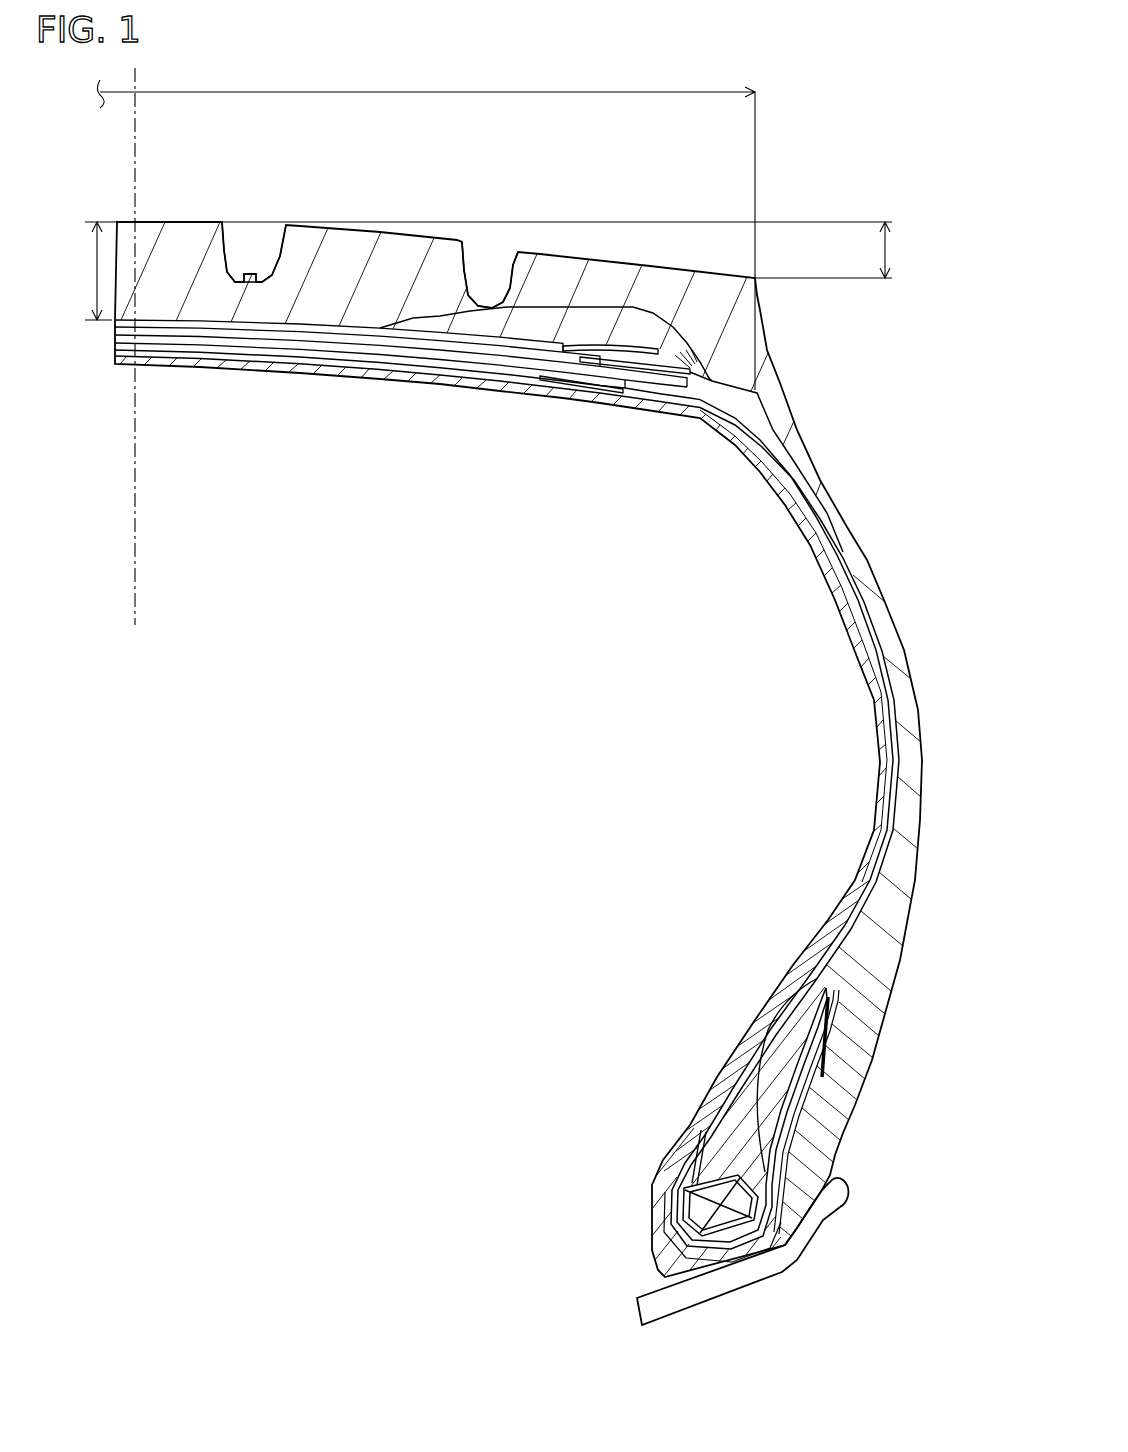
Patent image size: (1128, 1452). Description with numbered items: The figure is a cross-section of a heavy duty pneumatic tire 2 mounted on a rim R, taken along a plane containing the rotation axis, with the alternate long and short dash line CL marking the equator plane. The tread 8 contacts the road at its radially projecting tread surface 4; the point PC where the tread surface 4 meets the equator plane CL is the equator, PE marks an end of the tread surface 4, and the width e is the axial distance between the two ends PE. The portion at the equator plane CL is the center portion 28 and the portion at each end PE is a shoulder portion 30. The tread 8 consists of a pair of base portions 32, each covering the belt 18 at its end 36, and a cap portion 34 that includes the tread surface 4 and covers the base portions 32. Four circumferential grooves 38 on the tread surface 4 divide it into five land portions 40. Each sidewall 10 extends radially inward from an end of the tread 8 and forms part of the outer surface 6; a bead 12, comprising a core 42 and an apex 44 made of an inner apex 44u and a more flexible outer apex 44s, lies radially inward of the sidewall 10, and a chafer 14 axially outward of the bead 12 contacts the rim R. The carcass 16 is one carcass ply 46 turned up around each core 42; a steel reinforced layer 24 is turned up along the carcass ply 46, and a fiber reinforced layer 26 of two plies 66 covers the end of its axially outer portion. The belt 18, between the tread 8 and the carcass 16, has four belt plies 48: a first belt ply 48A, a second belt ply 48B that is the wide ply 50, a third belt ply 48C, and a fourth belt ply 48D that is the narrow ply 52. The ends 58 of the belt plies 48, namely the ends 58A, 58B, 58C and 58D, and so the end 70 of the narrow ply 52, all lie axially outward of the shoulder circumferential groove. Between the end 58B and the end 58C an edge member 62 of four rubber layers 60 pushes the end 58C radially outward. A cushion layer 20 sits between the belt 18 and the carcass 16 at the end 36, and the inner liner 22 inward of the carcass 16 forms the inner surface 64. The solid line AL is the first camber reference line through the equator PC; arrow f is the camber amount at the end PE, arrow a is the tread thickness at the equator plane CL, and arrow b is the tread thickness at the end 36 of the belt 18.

The heavy duty pneumatic tire 2 is at (828, 148).
The tread surface 4 is at (305, 225).
The outer surface 6 is at (808, 455).
The tread 8 is at (396, 222).
The sidewall 10 is at (920, 652).
The bead 12 is at (707, 1123).
The chafer 14 is at (847, 1167).
The carcass 16 is at (870, 722).
The belt 18 is at (400, 476).
The cushion layer 20 is at (705, 413).
The inner liner 22 is at (819, 571).
The steel reinforced layer 24 is at (667, 1223).
The fiber reinforced layer 26 is at (817, 1103).
The center portion 28 is at (211, 208).
The shoulder portion 30 is at (734, 260).
The base portion 32 is at (540, 320).
The cap portion 34 is at (343, 240).
The end of the belt 36 is at (787, 403).
The circumferential groove 38 is at (480, 295).
The land portion 40 is at (683, 262).
The core 42 is at (700, 1195).
The apex 44 is at (612, 995).
The outer apex 44s is at (785, 1030).
The inner apex 44u is at (747, 1085).
The carcass ply 46 is at (507, 799).
The belt ply 48 is at (401, 402).
The first belt ply 48A is at (182, 350).
The second belt ply 48B is at (247, 342).
The third belt ply 48C is at (303, 335).
The fourth belt ply 48D is at (367, 330).
The wide ply 50 is at (517, 358).
The narrow ply 52 is at (440, 337).
The end of the belt ply 58 is at (753, 326).
The first edge band 58A is at (633, 382).
The end of the second belt ply 58B is at (882, 407).
The end of the third belt ply 58C is at (640, 360).
The end of the fourth belt ply 58D is at (585, 347).
The rubber layer 60 is at (670, 385).
The edge member 62 is at (712, 363).
The inner surface 64 is at (817, 925).
The ply 66 is at (818, 1063).
The end of the narrow ply 70 is at (571, 130).
The equator plane CL is at (135, 603).
The equator PC is at (135, 222).
The end of the tread surface PE is at (757, 276).
The first camber reference line AL is at (847, 222).
The rim R is at (804, 1273).
The thickness of the tread at the equator plane a is at (91, 271).
The thickness of the tread at the end of the belt b is at (711, 318).
The width of the tread surface e is at (426, 227).
The camber amount f is at (895, 250).